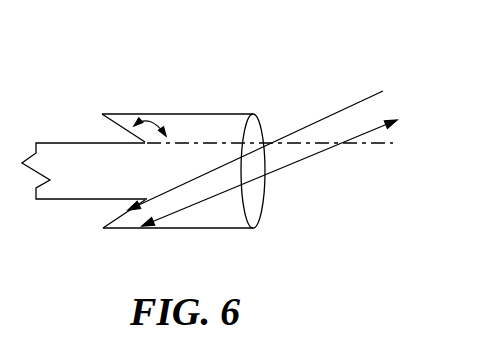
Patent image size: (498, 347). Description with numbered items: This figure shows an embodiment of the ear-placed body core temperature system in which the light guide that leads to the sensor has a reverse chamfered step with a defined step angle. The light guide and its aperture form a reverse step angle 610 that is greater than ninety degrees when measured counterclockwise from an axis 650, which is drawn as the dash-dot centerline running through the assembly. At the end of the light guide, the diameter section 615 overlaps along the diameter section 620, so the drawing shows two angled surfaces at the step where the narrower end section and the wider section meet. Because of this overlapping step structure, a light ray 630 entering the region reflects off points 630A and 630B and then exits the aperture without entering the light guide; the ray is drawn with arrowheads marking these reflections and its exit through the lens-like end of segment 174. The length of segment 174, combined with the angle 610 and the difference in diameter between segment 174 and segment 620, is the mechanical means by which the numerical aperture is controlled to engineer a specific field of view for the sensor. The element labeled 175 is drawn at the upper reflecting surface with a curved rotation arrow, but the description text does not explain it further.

The rotatable mirror 175 is at (126, 131).
The reverse step angle 610 is at (153, 114).
The segment 174 is at (233, 113).
The light ray 630 is at (222, 170).
The axis 650 is at (372, 145).
The diameter section 620 is at (138, 198).
The reflection point 630A is at (128, 209).
The reflection point 630B is at (145, 228).
The diameter section 615 is at (113, 229).